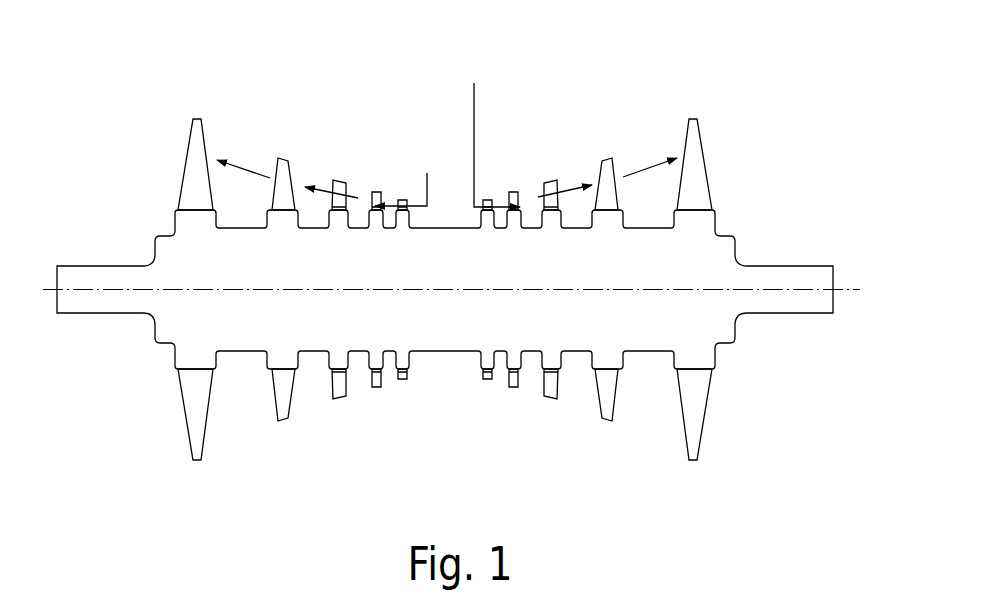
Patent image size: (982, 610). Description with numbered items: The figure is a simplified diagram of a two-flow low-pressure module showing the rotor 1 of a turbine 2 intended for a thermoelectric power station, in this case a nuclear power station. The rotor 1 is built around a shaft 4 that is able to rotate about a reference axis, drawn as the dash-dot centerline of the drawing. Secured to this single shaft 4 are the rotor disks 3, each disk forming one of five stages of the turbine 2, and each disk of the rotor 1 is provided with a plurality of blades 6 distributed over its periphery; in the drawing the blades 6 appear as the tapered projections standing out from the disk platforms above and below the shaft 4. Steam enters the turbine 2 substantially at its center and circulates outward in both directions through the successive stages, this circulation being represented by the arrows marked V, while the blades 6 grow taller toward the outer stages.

The rotor 1 is at (792, 263).
The turbine 2 is at (731, 76).
The rotor disk 3 is at (707, 215).
The shaft 4 is at (177, 260).
The blades 6 is at (278, 163).